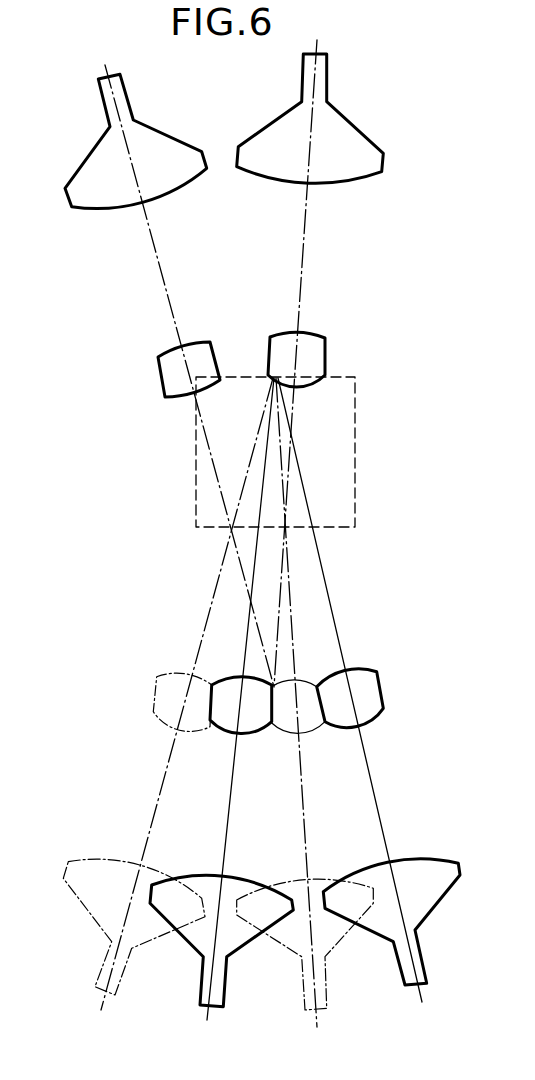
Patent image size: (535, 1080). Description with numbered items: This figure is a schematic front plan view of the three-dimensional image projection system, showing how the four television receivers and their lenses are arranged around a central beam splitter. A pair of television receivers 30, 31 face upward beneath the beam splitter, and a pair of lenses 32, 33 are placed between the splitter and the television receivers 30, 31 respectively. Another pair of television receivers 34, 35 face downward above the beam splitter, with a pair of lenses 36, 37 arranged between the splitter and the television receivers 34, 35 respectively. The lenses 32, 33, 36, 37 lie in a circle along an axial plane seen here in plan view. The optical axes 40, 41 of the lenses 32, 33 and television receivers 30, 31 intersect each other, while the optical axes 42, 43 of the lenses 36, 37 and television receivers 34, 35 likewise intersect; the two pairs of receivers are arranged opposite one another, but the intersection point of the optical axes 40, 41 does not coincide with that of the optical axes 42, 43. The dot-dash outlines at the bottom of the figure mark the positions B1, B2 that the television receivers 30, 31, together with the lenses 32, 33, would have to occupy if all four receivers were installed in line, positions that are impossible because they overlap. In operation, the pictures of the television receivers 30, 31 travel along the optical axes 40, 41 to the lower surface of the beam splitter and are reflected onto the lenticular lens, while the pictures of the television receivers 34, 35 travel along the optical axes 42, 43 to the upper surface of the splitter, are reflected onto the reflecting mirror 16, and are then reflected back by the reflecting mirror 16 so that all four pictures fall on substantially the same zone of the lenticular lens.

The reflecting mirror 16 is at (333, 412).
The television receiver 30 is at (242, 933).
The television receiver 31 is at (433, 892).
The lens 32 is at (253, 723).
The lens 33 is at (368, 710).
The television receiver 34 is at (82, 183).
The television receiver 35 is at (365, 155).
The lens 36 is at (173, 385).
The lens 37 is at (317, 350).
The optical axis 40 is at (227, 820).
The optical axis 41 is at (300, 805).
The optical axis 42 is at (153, 248).
The optical axis 43 is at (303, 267).
The overlapping position B1 is at (338, 932).
The overlapping position B2 is at (143, 928).